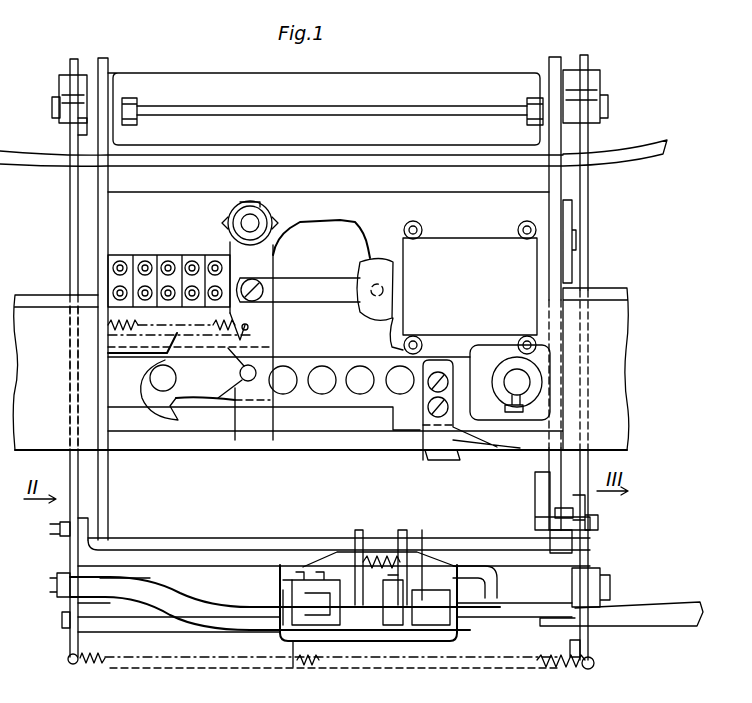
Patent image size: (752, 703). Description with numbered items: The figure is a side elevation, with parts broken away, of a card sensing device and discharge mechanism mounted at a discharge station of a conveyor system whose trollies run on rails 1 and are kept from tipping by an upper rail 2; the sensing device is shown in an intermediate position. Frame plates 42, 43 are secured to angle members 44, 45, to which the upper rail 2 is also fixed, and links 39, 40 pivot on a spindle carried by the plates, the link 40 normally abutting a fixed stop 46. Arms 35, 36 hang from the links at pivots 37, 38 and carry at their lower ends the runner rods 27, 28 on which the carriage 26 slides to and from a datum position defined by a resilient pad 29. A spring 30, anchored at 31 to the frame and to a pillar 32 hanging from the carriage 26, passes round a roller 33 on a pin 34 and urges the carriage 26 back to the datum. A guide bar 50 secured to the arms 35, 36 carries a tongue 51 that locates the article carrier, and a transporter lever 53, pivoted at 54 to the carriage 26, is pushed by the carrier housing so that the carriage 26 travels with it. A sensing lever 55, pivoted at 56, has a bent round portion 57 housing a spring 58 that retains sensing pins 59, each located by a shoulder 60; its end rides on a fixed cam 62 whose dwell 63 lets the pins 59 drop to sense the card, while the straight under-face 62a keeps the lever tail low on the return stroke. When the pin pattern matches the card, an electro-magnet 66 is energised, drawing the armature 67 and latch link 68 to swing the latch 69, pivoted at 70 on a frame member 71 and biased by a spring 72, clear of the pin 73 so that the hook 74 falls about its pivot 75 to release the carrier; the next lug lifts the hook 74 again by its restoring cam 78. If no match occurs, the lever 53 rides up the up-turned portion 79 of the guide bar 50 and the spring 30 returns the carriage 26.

The rails 1 is at (597, 302).
The upper rail 2 is at (635, 155).
The carriage 26 is at (430, 645).
The rod 27 is at (143, 615).
The rod 28 is at (70, 590).
The resilient pad 29 is at (580, 568).
The spring 30 is at (293, 668).
The spring anchorage 31 is at (68, 662).
The pillar 32 is at (250, 660).
The roller 33 is at (592, 668).
The pin 34 is at (565, 672).
The arm 35 is at (70, 500).
The arm 36 is at (570, 512).
The pivot 37 is at (590, 70).
The pivot 38 is at (62, 78).
The link 39 is at (576, 80).
The link 40 is at (82, 80).
The frame plate 42 is at (108, 60).
The frame plate 43 is at (553, 65).
The angle member 44 is at (181, 155).
The angle member 45 is at (477, 155).
The fixed stop 46 is at (80, 130).
The guide bar 50 is at (680, 612).
The tongue 51 is at (505, 650).
The transporter lever 53 is at (283, 603).
The pivot 54 is at (375, 610).
The sensing lever 55 is at (462, 570).
The pivot 56 is at (303, 580).
The bent round portion 57 is at (413, 562).
The spring 58 is at (368, 560).
The sensing pins 59 is at (412, 560).
The shoulder 60 is at (440, 552).
The fixed cam 62 is at (565, 553).
The straight under-face 62a is at (195, 548).
The dwell 63 is at (352, 565).
The electro-magnet 66 is at (525, 280).
The armature 67 is at (366, 268).
The latch link 68 is at (295, 278).
The latch 69 is at (262, 340).
The pivot 70 is at (256, 217).
The frame member 71 is at (353, 196).
The spring 72 is at (128, 335).
The pin 73 is at (243, 380).
The hook 74 is at (195, 382).
The pivot 75 is at (512, 390).
The restoring cam 78 is at (458, 455).
The up-turned portion 79 is at (143, 593).